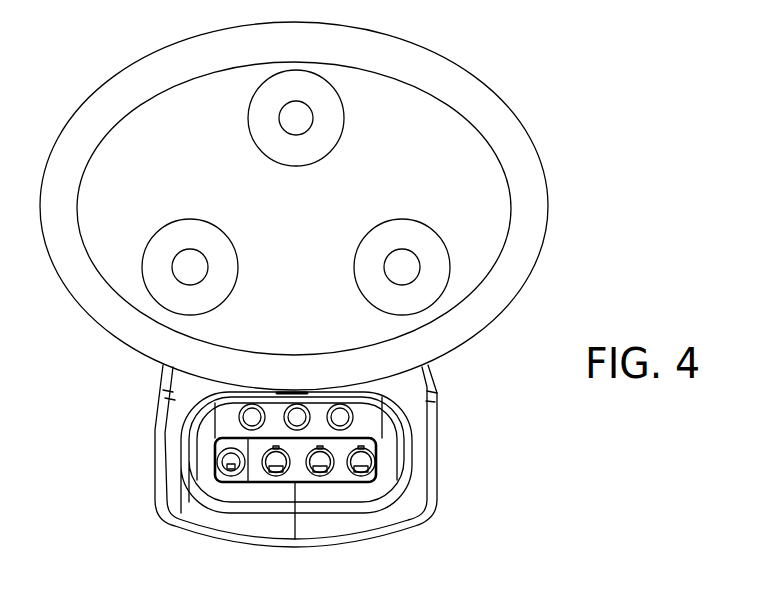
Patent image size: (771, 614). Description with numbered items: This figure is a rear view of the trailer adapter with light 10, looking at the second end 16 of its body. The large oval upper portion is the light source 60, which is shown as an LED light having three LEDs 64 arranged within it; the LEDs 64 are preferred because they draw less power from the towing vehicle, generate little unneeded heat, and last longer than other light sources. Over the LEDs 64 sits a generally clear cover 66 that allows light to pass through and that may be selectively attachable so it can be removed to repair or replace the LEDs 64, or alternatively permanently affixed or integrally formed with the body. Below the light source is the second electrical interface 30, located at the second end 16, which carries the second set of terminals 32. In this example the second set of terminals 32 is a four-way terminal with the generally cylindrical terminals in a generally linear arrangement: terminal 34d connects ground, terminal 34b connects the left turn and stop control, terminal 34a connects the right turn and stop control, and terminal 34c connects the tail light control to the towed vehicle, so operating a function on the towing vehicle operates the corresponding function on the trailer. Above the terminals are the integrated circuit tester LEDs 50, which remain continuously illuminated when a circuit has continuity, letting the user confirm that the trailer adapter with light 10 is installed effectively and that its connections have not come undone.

The trailer adapter with light 10 is at (590, 155).
The light source 60 is at (477, 86).
The cover 66 is at (528, 228).
The LEDs 64 is at (318, 93).
The second set of terminals 32 is at (448, 428).
The second electrical interface 30 is at (385, 472).
The light-emitting diode (LED) 50 is at (250, 415).
The terminal 34a is at (361, 472).
The terminal 34b is at (320, 472).
The terminal 34c is at (274, 472).
The terminal 34d is at (233, 462).
The second end 16 is at (575, 612).